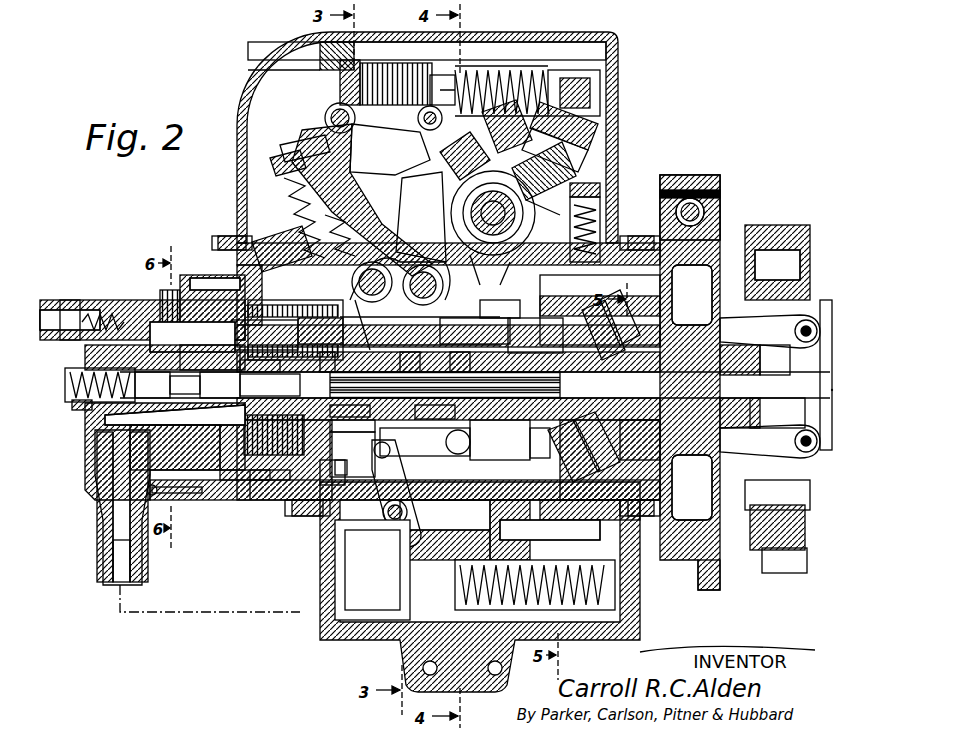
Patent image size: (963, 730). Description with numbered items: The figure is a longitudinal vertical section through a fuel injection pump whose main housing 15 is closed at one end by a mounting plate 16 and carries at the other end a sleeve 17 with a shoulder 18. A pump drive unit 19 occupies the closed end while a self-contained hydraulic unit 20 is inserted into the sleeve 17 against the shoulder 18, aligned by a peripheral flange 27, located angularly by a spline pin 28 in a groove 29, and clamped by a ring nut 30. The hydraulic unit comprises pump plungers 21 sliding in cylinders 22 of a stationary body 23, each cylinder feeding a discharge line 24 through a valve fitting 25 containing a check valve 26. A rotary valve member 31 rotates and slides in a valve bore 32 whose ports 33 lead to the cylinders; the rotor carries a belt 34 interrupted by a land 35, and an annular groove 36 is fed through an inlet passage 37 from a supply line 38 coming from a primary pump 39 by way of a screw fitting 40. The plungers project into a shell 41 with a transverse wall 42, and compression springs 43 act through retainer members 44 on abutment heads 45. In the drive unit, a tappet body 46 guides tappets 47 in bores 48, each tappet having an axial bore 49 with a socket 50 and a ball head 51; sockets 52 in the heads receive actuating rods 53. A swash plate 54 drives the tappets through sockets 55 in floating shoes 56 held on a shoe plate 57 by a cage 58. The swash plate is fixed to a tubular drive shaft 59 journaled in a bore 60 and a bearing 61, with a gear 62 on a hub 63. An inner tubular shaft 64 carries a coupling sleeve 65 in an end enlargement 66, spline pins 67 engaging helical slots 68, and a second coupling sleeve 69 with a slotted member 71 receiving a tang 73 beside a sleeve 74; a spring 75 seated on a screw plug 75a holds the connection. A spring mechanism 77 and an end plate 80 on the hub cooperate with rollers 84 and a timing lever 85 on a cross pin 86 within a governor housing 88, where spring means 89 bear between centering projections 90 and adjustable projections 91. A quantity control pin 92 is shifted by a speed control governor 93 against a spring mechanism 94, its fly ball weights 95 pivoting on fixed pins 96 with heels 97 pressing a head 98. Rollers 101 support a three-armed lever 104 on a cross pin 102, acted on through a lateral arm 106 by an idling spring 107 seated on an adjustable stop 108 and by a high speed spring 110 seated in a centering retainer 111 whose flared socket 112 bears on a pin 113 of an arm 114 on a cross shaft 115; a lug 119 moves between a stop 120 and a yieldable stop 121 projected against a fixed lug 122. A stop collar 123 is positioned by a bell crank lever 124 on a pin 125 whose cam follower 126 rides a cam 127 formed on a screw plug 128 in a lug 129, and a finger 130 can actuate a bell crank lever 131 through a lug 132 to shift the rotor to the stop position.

The main housing 15 is at (310, 518).
The mounting plate 16 is at (725, 235).
The sleeve 17 is at (228, 500).
The shoulder 18 is at (250, 500).
The pump drive unit 19 is at (586, 310).
The self-contained hydraulic unit 20 is at (136, 300).
The pump plungers 21 is at (195, 337).
The cylinders 22 is at (210, 357).
The stationary body 23 is at (185, 495).
The discharge lines 24 is at (48, 310).
The valve fittings 25 is at (70, 300).
The spring-seated check valve 26 is at (108, 312).
The peripheral flange 27 is at (228, 505).
The spline pin 28 is at (230, 243).
The longitudinal groove 29 is at (195, 285).
The ring nut 30 is at (165, 300).
The rotary valve member 31 is at (175, 445).
The valve bore 32 is at (205, 428).
The inlet and by-pass ports 33 is at (165, 357).
The fuel supply and relief belt 34 is at (190, 383).
The land 35 is at (175, 385).
The annular groove 36 is at (175, 415).
The fuel inlet passage 37 is at (100, 440).
The supply line 38 is at (103, 576).
The primary pump 39 is at (370, 630).
The screw fitting 40 is at (97, 490).
The enclosing shell 41 is at (339, 472).
The transverse wall 42 is at (352, 451).
The compression springs 43 is at (290, 310).
The retainer members 44 is at (315, 312).
The abutment heads 45 is at (290, 335).
The tappet body 46 is at (460, 478).
The tappets 47 is at (513, 466).
The bores 48 is at (467, 355).
The axial bore 49 is at (495, 316).
The socket 50 is at (510, 330).
The ball head 51 is at (590, 325).
The sockets 52 is at (320, 331).
The actuating rods 53 is at (342, 410).
The swash plate 54 is at (590, 455).
The sockets 55 is at (619, 317).
The floating shoes 56 is at (590, 497).
The shoe plate 57 is at (590, 465).
The cage 58 is at (528, 462).
The tubular drive shaft 59 is at (641, 440).
The bore 60 is at (488, 448).
The bearing 61 is at (712, 435).
The gear 62 is at (775, 560).
The hub 63 is at (740, 510).
The inner tubular shaft 64 is at (670, 380).
The coupling sleeve 65 is at (765, 358).
The end enlargement 66 is at (713, 424).
The spline pins 67 is at (730, 351).
The helical slots 68 is at (730, 428).
The second coupling sleeve 69 is at (355, 411).
The slotted member 71 is at (352, 421).
The tang 73 is at (295, 384).
The sleeve 74 is at (260, 364).
The compression spring 75 is at (68, 390).
The screw plug 75a is at (78, 408).
The adjustable spring mechanism 77 is at (508, 58).
The end plate 80 is at (800, 495).
The anti-friction rollers 84 is at (435, 361).
The timing lever 85 is at (448, 265).
The cross pin 86 is at (423, 270).
The governor housing 88 is at (237, 168).
The spring means 89 is at (540, 70).
The centering projections 90 is at (480, 68).
The adjustable centering projections 91 is at (555, 78).
The quantity control pin 92 is at (551, 375).
The speed control governor 93 is at (728, 300).
The manually adjustable spring mechanism 94 is at (455, 195).
The fly ball weights 95 is at (695, 310).
The fixed pins 96 is at (810, 318).
The heels 97 is at (800, 432).
The head 98 is at (815, 370).
The anti-friction rollers 101 is at (420, 331).
The cross pin 102 is at (376, 270).
The three-armed lever 104 is at (440, 322).
The lateral arm 106 is at (330, 228).
The idling spring 107 is at (290, 214).
The adjustable stop 108 is at (292, 150).
The high speed control spring 110 is at (386, 133).
The centering retainer 111 is at (470, 150).
The flared socket 112 is at (505, 200).
The pin 113 is at (508, 140).
The arm 114 is at (560, 170).
The cross shaft 115 is at (548, 178).
The lug 119 is at (565, 150).
The stop 120 is at (560, 130).
The yieldable stop 121 is at (602, 200).
The fixed lug 122 is at (600, 188).
The stop collar 123 is at (369, 325).
The bell crank lever 124 is at (305, 255).
The pin 125 is at (350, 112).
The cam follower 126 is at (352, 128).
The cam 127 is at (418, 115).
The screw plug 128 is at (400, 72).
The lug 129 is at (360, 90).
The finger 130 is at (505, 273).
The bell crank lever 131 is at (483, 270).
The lug 132 is at (290, 172).